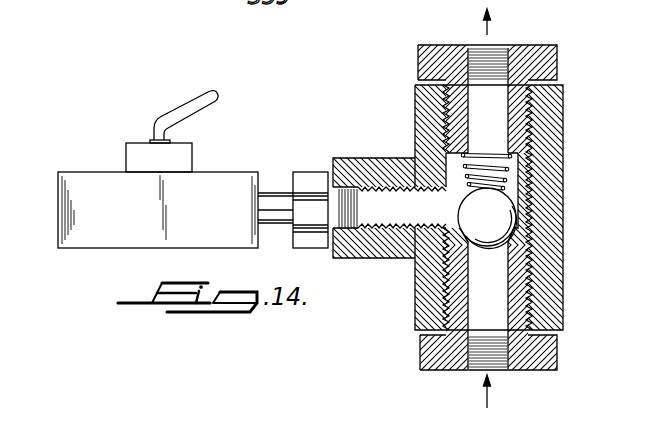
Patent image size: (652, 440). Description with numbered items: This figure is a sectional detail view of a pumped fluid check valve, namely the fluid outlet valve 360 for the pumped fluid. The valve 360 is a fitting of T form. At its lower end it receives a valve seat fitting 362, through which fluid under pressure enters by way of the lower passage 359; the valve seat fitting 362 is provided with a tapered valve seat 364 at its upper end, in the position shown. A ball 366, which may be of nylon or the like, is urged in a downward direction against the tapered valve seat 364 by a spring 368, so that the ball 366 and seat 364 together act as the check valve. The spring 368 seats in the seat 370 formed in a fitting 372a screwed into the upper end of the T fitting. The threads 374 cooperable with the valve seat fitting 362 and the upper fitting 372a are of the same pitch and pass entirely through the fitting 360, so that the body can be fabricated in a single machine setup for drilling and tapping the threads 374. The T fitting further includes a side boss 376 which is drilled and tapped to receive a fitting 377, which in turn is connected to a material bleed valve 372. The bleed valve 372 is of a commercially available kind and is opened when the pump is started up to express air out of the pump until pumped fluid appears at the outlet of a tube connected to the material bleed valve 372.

The lower bore passage 359 is at (497, 312).
The fluid outlet valve 360 is at (568, 240).
The valve seat fitting 362 is at (425, 356).
The tapered valve seat 364 is at (517, 223).
The ball 366 is at (502, 208).
The spring 368 is at (538, 166).
The seat 370 is at (477, 148).
The material bleed valve 372 is at (224, 155).
The top plug fitting 372a is at (556, 47).
The threads 374 is at (451, 177).
The side boss 376 is at (378, 158).
The fitting 377 is at (305, 175).